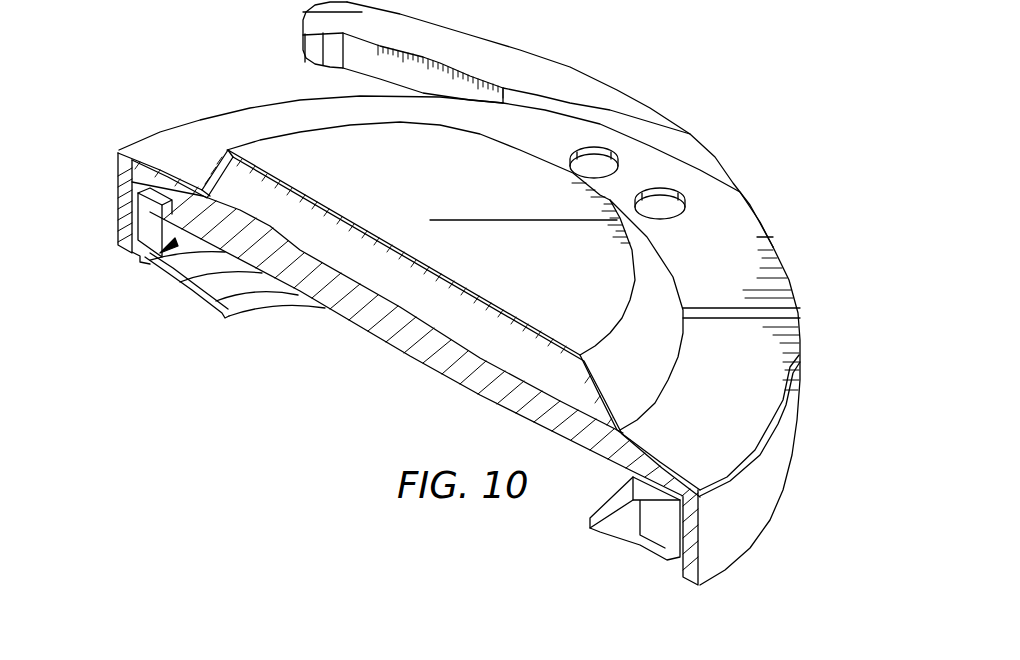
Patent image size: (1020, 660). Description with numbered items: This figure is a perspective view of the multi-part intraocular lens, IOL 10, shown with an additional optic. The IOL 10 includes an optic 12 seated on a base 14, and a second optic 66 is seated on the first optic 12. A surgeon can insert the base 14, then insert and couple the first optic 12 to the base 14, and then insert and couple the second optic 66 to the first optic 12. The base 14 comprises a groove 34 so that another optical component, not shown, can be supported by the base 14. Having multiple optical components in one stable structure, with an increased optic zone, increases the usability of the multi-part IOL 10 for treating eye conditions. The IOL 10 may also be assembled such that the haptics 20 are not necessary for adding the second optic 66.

The IOL 10 is at (688, 75).
The optic 12 is at (390, 327).
The base 14 is at (175, 275).
The haptics 20 is at (572, 60).
The groove 34 is at (161, 258).
The second optic 66 is at (317, 150).